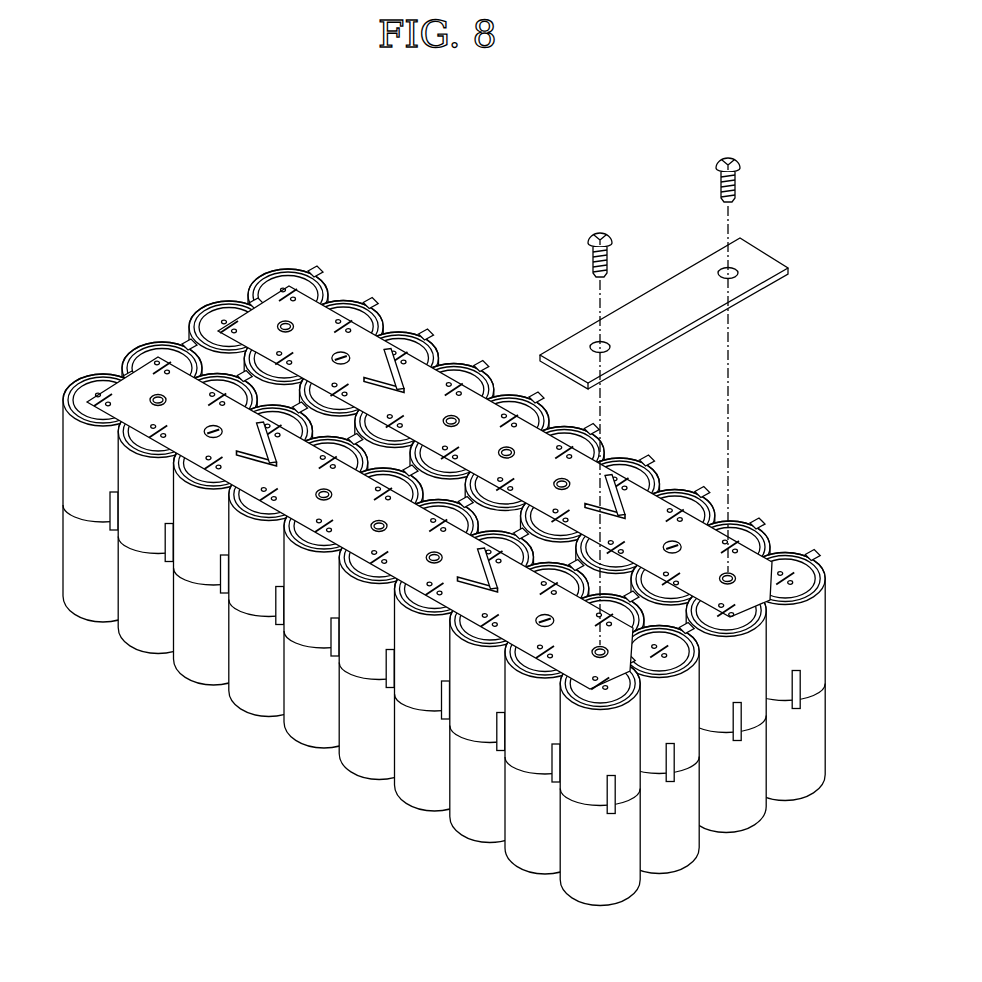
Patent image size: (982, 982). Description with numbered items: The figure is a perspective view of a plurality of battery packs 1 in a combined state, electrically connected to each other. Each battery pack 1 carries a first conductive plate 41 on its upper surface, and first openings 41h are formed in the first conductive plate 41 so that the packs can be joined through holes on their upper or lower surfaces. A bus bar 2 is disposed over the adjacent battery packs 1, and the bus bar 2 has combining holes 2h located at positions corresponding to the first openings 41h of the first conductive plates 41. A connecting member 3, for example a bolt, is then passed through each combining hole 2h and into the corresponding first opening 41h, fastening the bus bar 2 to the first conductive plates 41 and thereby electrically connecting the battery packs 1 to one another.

The battery pack 1 is at (228, 280).
The bus bar 2 is at (770, 248).
The combining hole 2h is at (740, 267).
The connecting member 3 is at (612, 237).
The first conductive plate 41 is at (763, 578).
The first opening 41h is at (735, 573).